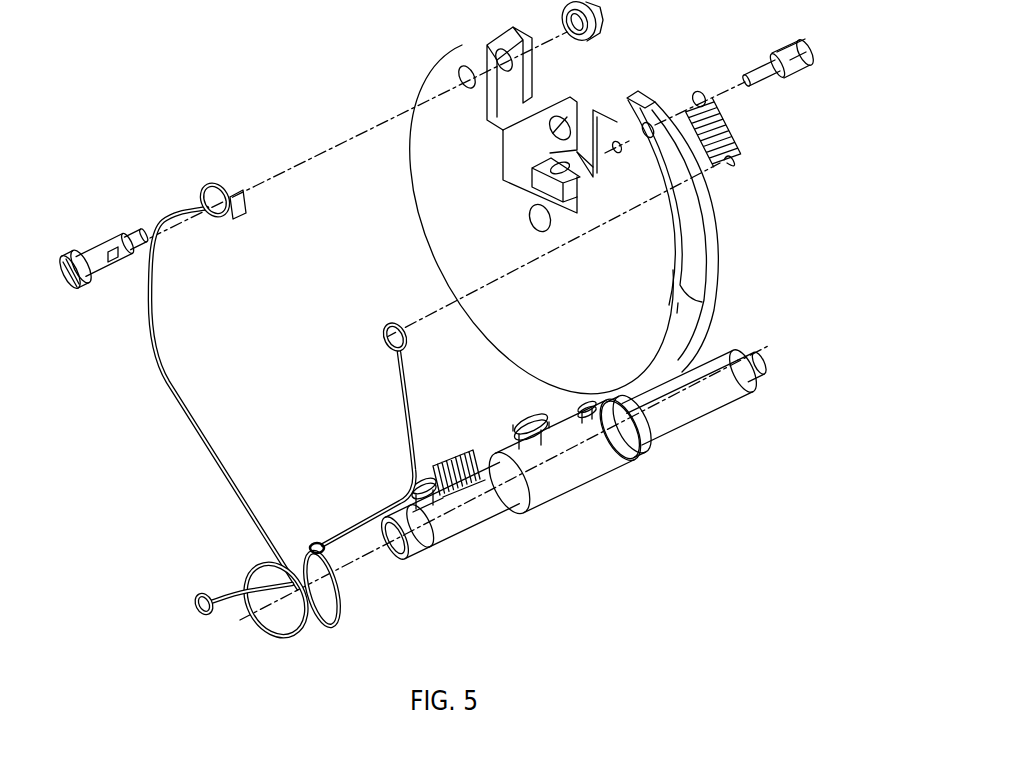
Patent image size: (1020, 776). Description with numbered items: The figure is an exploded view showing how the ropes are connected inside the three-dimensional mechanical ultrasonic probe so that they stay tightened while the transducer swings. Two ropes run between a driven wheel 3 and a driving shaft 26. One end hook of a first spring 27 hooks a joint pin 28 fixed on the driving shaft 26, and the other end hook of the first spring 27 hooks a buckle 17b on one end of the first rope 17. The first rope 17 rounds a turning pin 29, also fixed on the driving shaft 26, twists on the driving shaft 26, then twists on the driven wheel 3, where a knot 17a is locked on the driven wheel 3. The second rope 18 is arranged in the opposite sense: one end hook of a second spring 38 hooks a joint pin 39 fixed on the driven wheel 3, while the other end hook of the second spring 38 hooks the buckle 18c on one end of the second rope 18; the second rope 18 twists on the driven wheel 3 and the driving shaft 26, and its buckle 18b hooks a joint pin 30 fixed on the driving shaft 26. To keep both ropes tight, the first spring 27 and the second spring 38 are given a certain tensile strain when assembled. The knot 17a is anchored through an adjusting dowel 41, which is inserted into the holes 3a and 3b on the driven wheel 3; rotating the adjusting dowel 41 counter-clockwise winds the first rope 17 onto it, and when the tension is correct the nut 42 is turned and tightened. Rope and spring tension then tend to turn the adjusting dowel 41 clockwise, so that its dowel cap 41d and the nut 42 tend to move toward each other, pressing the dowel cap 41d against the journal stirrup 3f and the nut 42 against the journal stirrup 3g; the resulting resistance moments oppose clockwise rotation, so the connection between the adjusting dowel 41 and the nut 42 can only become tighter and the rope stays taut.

The driven wheel 3 is at (587, 199).
The hole 3a is at (459, 73).
The hole 3b is at (500, 56).
The journal stirrup 3f is at (480, 107).
The journal stirrup 3g is at (517, 67).
The first rope 17 is at (220, 373).
The knot 17a is at (235, 192).
The buckle 17b is at (196, 606).
The second rope 18 is at (359, 464).
The buckle 18b is at (327, 550).
The buckle 18c is at (383, 342).
The driving shaft 26 is at (730, 393).
The first spring 27 is at (463, 490).
The joint pin 28 is at (430, 510).
The turning pin 29 is at (543, 440).
The joint pin 30 is at (637, 425).
The second spring 38 is at (733, 135).
The joint pin 39 is at (772, 72).
The adjusting dowel 41 is at (102, 272).
The dowel cap 41d is at (80, 290).
The nut 42 is at (600, 20).